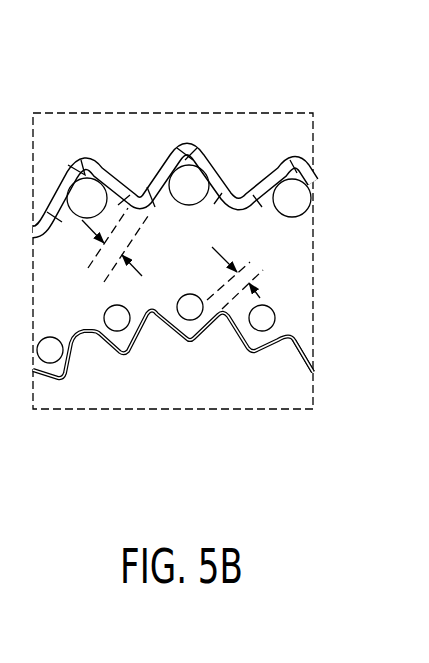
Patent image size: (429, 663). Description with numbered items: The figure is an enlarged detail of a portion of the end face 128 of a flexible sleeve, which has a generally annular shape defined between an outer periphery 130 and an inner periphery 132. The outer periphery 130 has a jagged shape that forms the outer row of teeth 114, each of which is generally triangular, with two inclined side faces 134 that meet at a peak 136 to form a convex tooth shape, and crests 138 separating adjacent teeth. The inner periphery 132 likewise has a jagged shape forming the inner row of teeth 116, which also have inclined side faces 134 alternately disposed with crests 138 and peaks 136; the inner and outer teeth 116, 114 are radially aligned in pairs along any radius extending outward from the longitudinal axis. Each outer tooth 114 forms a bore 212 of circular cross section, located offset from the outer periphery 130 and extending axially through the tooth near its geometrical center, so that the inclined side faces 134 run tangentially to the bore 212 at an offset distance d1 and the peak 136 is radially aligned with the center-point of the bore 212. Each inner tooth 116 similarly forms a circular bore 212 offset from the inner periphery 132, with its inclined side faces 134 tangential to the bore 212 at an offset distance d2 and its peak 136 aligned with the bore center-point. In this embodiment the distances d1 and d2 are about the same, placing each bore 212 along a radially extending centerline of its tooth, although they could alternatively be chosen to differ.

The outer row of teeth 114 is at (322, 188).
The inner row of teeth 116 is at (317, 348).
The end face 128 is at (299, 255).
The outer periphery 130 is at (81, 156).
The inner periphery 132 is at (276, 352).
The inclined side faces 134 is at (167, 158).
The peak 136 is at (190, 140).
The crests 138 is at (139, 192).
The bore 212 is at (190, 191).
The offset distance d1 is at (120, 254).
The offset distance d2 is at (242, 278).